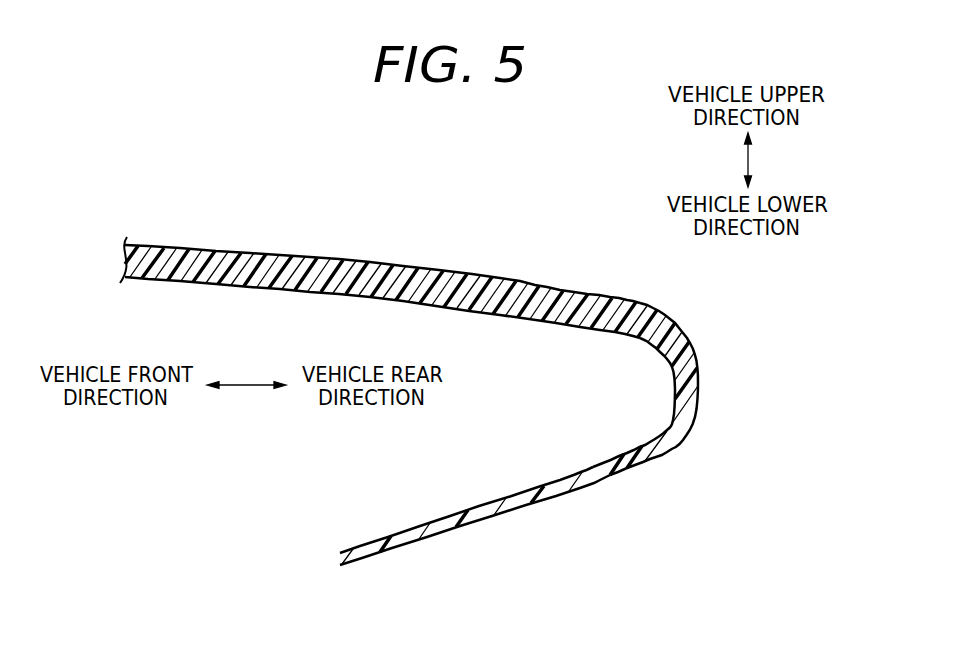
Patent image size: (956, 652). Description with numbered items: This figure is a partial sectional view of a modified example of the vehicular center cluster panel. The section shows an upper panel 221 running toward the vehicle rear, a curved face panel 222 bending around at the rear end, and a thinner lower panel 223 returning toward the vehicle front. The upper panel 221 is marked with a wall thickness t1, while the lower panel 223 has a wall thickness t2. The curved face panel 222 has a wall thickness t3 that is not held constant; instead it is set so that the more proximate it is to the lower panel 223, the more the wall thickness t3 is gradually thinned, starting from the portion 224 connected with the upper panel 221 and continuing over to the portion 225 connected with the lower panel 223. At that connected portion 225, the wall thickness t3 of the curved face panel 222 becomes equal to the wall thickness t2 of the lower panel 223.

The upper panel 221 is at (383, 271).
The curved face panel 222 is at (699, 380).
The lower panel 223 is at (482, 521).
The portion connected with upper panel 224 is at (581, 291).
The portion connected with lower panel 225 is at (564, 496).
The wall thickness t1 is at (452, 343).
The wall thickness of lower panel t2 is at (436, 575).
The wall thickness of curved face panel t3 is at (638, 373).